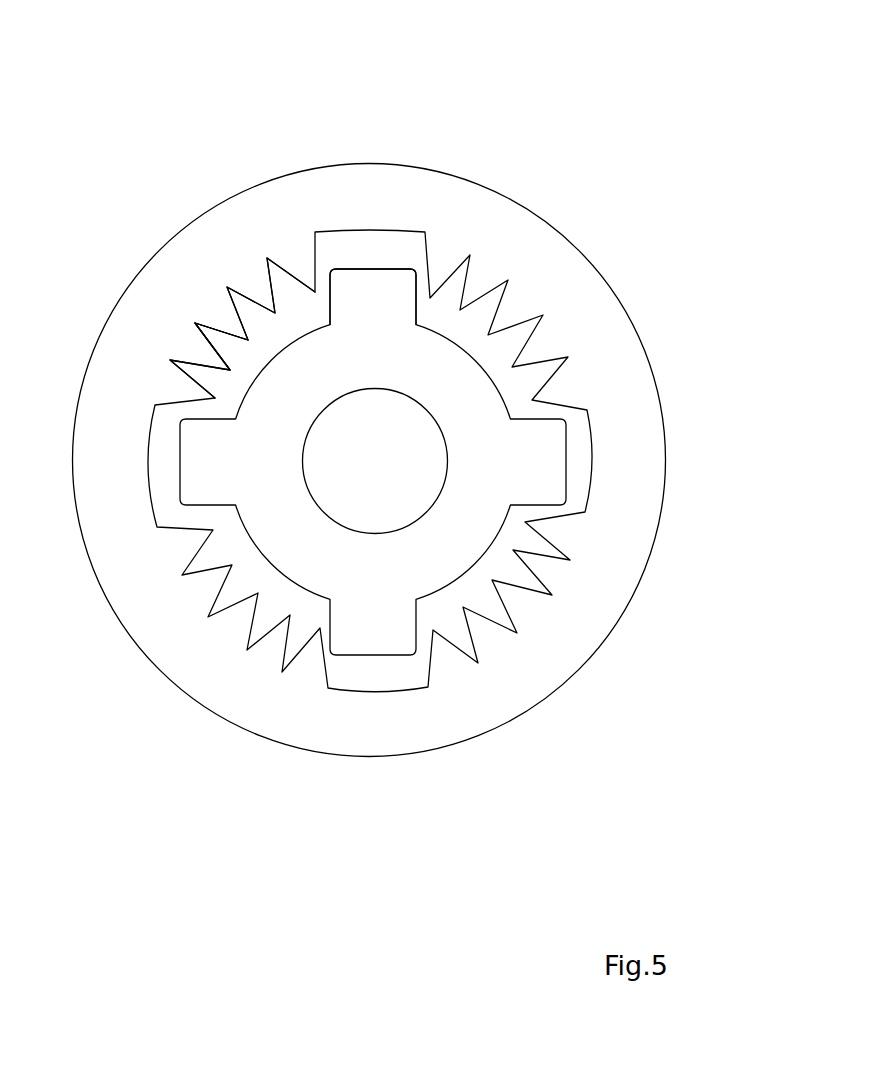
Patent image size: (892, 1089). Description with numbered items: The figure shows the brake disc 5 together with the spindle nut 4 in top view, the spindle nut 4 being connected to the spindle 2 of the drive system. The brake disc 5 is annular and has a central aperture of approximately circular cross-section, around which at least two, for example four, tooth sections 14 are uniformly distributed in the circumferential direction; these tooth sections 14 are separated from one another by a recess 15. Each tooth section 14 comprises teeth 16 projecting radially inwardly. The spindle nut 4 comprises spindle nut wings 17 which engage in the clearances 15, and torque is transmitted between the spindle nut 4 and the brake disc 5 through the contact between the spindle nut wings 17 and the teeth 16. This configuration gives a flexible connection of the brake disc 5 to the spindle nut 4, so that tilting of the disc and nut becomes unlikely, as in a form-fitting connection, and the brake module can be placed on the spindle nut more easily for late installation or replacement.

The spindle 2 is at (366, 473).
The spindle nut 4 is at (430, 542).
The brake disc 5 is at (333, 203).
The tooth sections 14 is at (238, 270).
The recess 15 is at (377, 247).
The teeth 16 is at (232, 328).
The spindle nut wings 17 is at (370, 293).